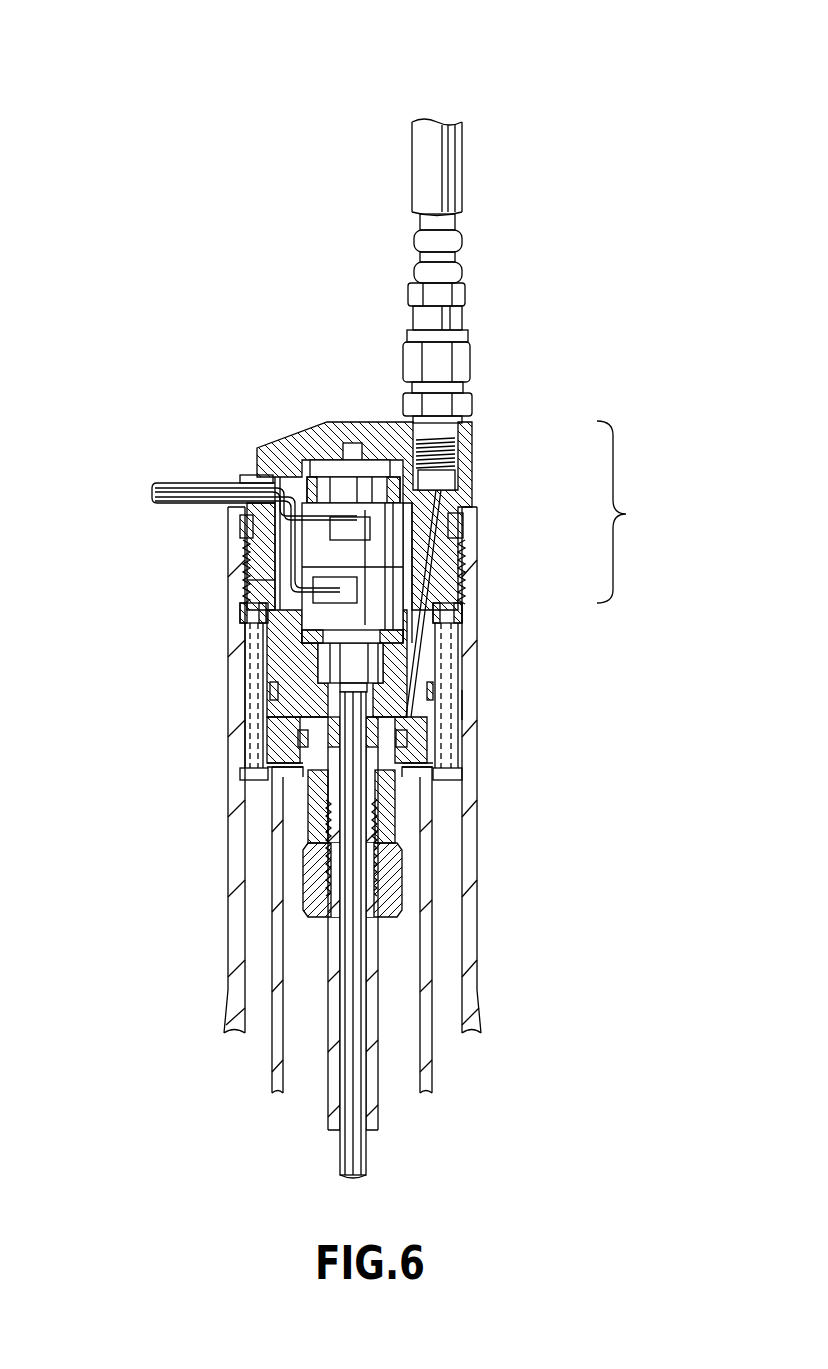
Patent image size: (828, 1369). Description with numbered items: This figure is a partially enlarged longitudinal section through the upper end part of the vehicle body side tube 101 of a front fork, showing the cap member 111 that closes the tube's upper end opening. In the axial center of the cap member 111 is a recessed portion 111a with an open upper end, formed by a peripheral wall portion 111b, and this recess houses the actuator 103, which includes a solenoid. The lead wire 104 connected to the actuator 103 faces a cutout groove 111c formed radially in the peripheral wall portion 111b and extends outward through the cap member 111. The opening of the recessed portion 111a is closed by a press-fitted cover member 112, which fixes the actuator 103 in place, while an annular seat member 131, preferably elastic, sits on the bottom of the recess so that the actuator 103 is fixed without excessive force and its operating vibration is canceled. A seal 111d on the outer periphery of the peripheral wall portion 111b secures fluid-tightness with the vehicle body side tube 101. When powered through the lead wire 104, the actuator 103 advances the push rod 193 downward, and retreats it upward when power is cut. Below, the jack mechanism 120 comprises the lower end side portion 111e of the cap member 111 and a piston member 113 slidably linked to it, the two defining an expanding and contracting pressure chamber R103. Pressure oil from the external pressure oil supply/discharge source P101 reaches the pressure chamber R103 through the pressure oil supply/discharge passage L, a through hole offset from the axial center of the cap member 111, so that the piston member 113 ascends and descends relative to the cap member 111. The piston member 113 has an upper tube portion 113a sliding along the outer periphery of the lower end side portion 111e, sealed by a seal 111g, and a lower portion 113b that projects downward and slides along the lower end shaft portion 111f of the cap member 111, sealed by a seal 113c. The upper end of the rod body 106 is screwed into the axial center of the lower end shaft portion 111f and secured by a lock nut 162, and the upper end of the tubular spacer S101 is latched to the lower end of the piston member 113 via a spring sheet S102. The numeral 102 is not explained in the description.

The pressure oil supply/discharge source P101 is at (435, 112).
The cover member 112 is at (290, 436).
The actuator 103 is at (380, 466).
The cutout groove 111c is at (250, 480).
The lead wire 104 is at (180, 486).
The seal 111d is at (240, 527).
The peripheral wall portion 111b is at (262, 557).
The recessed portion 111a is at (245, 592).
The seat member 131 is at (283, 633).
The upper tube portion 113a is at (263, 663).
The seal 111g is at (272, 698).
The pressure chamber R103 is at (300, 737).
The seal 113c is at (262, 770).
The vehicle body side tube 101 is at (355, 770).
The spacer S101 is at (278, 1065).
The rod body 106 is at (333, 1117).
The push rod 193 is at (366, 1152).
The lock nut 162 is at (388, 885).
The lower end shaft portion 111f is at (388, 830).
The spring sheet S102 is at (433, 770).
The lower portion 113b is at (445, 745).
The partition wall 102 is at (458, 707).
The lower end side portion 111e is at (432, 660).
The piston member 113 is at (359, 693).
The pressure oil supply/discharge passage L is at (425, 563).
The cap member 111 is at (330, 611).
The jack mechanism 120 is at (636, 512).